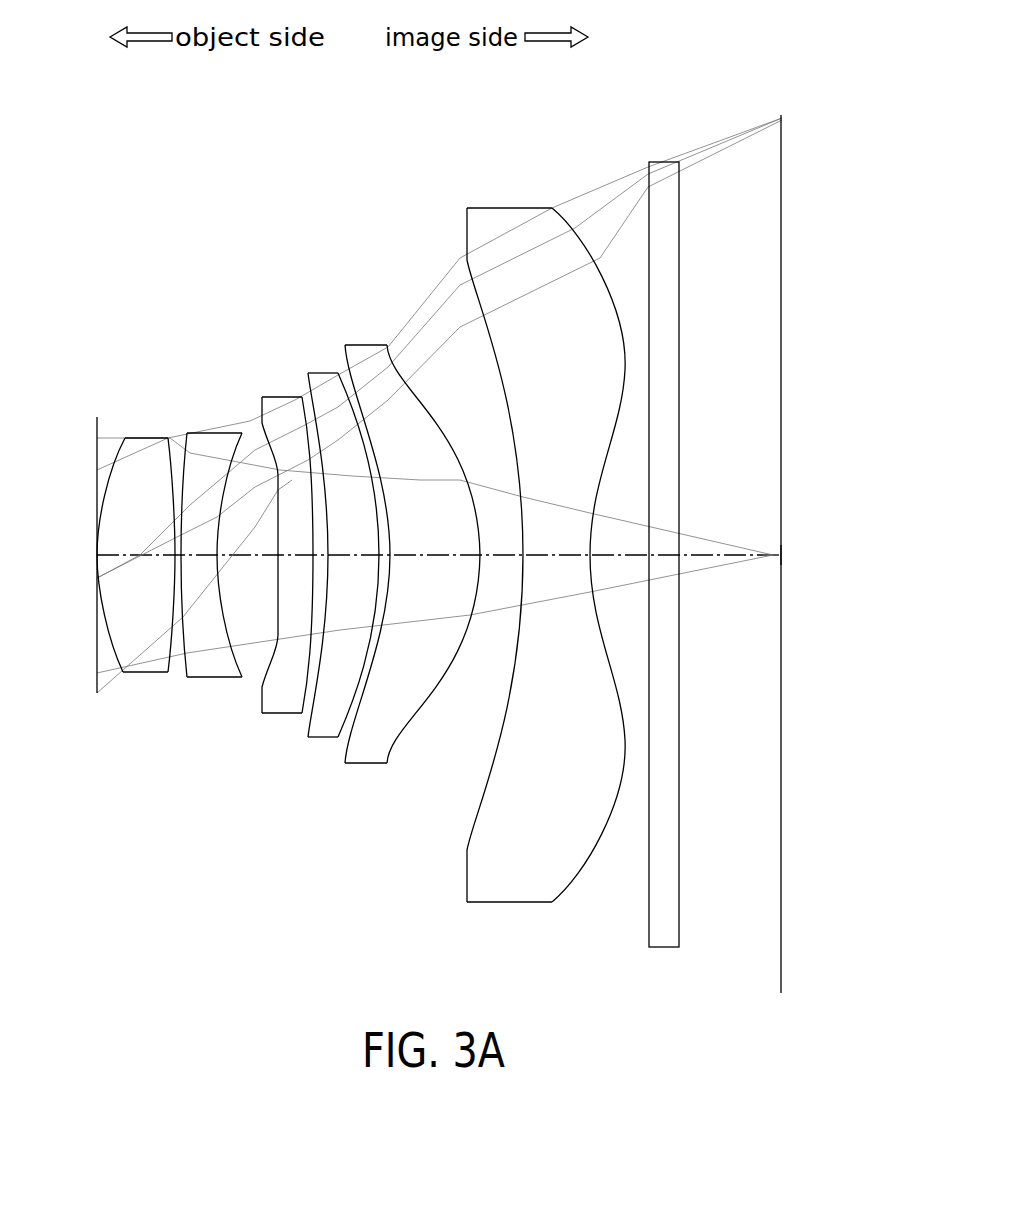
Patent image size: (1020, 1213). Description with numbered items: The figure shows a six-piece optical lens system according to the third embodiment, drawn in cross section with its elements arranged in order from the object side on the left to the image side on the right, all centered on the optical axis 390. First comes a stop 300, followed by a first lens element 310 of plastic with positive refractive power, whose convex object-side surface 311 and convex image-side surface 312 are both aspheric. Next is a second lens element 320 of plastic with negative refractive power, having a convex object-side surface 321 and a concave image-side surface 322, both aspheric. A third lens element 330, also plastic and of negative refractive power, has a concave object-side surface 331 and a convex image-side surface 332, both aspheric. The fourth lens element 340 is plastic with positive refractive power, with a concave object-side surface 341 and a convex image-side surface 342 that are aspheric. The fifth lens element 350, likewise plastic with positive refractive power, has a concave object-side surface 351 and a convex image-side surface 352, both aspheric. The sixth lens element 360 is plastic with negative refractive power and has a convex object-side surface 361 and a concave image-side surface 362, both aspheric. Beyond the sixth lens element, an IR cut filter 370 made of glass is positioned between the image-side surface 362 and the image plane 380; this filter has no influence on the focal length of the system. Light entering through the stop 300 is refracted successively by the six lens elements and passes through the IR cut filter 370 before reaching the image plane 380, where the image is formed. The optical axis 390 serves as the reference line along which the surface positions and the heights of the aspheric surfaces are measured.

The stop 300 is at (122, 435).
The first lens element 310 is at (134, 550).
The object-side surface of the first lens element 311 is at (118, 643).
The image-side surface of the first lens element 312 is at (166, 630).
The second lens element 320 is at (199, 564).
The object-side surface of the second lens element 321 is at (183, 660).
The image-side surface of the second lens element 322 is at (226, 637).
The third lens element 330 is at (266, 541).
The object-side surface of the third lens element 331 is at (276, 664).
The image-side surface of the third lens element 332 is at (311, 677).
The fourth lens element 340 is at (324, 560).
The object-side surface of the fourth lens element 341 is at (311, 660).
The image-side surface of the fourth lens element 342 is at (373, 668).
The fifth lens element 350 is at (411, 550).
The object-side surface of the fifth lens element 351 is at (356, 703).
The image-side surface of the fifth lens element 352 is at (398, 730).
The sixth lens element 360 is at (515, 540).
The object-side surface of the sixth lens element 361 is at (477, 808).
The image-side surface of the sixth lens element 362 is at (593, 857).
The IR cut filter 370 is at (662, 160).
The image plane 380 is at (780, 180).
The optical axis 390 is at (708, 555).